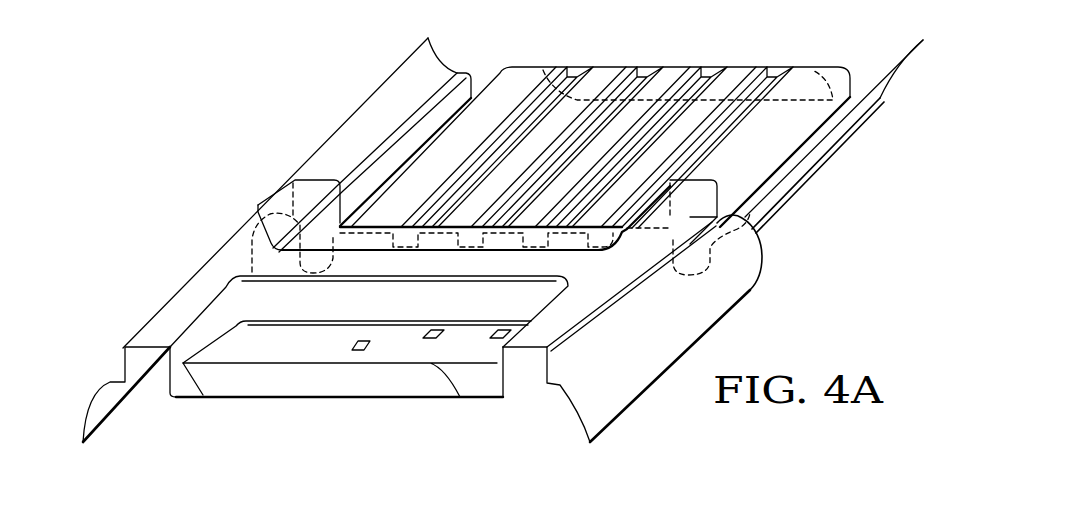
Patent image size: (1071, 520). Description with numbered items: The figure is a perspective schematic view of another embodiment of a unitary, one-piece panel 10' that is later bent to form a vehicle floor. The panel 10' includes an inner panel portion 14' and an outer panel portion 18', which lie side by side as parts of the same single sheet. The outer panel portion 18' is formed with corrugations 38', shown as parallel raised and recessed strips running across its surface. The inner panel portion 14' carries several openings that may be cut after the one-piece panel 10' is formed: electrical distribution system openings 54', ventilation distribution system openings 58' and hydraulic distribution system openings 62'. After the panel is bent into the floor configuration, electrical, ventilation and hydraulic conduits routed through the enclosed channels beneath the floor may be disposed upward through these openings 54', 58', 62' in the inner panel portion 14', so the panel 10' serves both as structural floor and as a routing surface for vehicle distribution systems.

The one-piece panel 10' is at (503, 222).
The outer panel portion 18' is at (595, 114).
The corrugations 38' is at (597, 114).
The inner panel portion 14' is at (563, 285).
The hydraulic distribution system openings 62' is at (341, 392).
The ventilation distribution system openings 58' is at (412, 387).
The electrical distribution system openings 54' is at (479, 387).